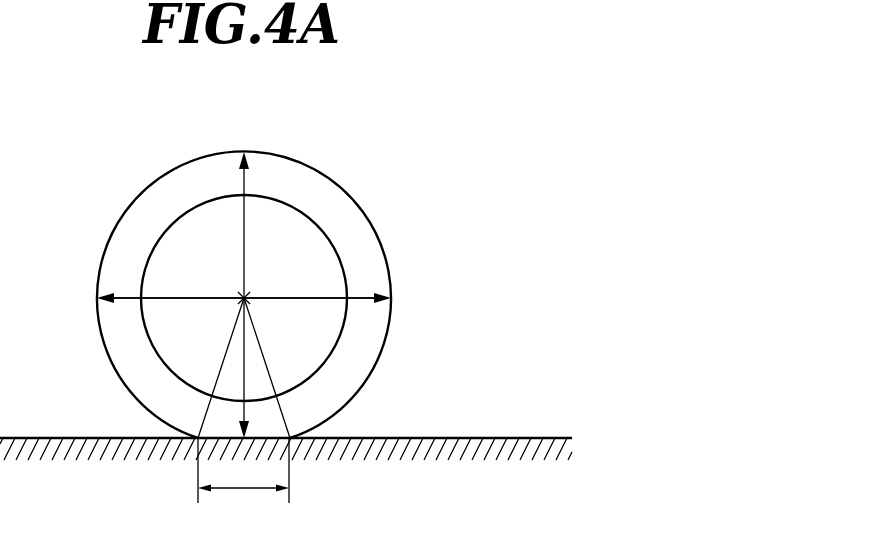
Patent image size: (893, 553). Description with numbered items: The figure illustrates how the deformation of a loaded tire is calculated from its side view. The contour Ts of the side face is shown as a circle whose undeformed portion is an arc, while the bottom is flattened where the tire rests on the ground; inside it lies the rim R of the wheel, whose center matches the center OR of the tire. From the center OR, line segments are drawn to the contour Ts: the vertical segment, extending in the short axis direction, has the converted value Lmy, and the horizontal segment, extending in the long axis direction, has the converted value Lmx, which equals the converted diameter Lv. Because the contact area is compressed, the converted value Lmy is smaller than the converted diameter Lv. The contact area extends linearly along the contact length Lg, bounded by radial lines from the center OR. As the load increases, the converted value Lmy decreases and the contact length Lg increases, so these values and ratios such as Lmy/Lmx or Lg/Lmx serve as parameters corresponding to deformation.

The contour of the side face Ts is at (348, 192).
The rim R is at (262, 194).
The center OR is at (244, 298).
The converted value Lmy is at (242, 215).
The converted diameter Lv is at (300, 297).
The converted value Lmx is at (294, 249).
The contact length Lg is at (244, 413).